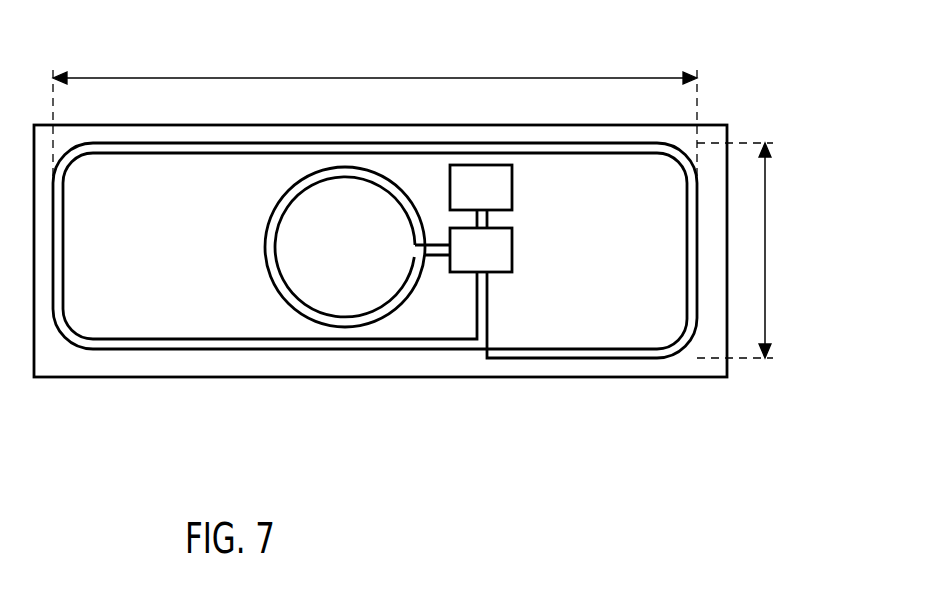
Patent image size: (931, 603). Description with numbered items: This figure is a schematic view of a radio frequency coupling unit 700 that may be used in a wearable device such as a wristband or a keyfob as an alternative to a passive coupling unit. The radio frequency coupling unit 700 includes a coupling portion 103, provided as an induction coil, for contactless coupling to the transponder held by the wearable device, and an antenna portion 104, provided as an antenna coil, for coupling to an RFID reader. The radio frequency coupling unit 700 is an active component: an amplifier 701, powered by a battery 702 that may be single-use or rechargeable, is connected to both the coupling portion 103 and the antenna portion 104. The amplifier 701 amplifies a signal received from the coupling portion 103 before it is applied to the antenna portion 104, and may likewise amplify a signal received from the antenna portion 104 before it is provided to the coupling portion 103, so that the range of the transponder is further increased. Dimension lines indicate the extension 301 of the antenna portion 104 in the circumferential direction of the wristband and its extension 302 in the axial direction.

The radio frequency coupling unit 700 is at (193, 379).
The antenna portion 104 is at (130, 155).
The coupling portion 103 is at (344, 314).
The amplifier 701 is at (503, 263).
The battery 702 is at (503, 200).
The extension of the antenna portion in the circumferential direction 301 is at (374, 78).
The extension of the antenna portion in the axial direction 302 is at (767, 252).